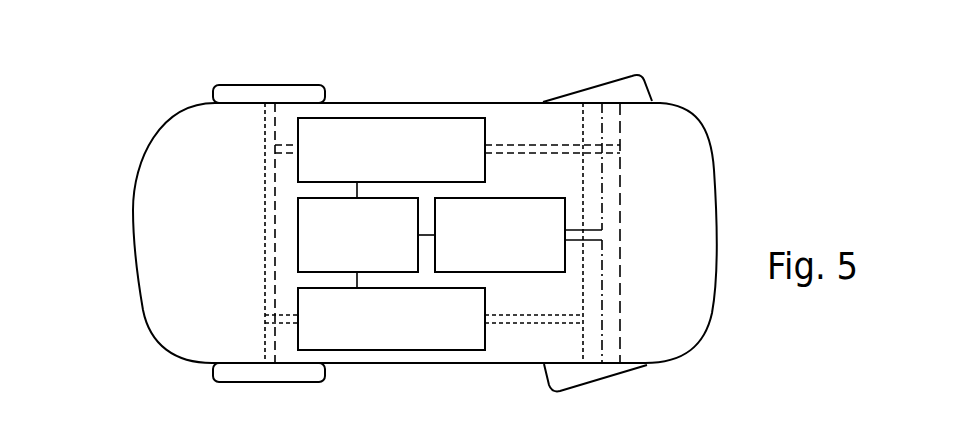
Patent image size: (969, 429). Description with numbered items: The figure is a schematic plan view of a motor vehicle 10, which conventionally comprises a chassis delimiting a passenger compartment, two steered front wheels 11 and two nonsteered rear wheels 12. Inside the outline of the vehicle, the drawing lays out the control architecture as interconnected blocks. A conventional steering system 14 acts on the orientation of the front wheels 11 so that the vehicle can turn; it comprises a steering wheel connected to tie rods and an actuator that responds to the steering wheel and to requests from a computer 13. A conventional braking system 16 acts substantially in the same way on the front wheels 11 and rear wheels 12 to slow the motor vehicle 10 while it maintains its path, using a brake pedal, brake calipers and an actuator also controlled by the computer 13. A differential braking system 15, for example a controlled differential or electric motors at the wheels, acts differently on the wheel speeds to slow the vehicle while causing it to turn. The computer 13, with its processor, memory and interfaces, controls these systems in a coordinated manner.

The motor vehicle 10 is at (133, 265).
The steered front wheels 11 is at (588, 86).
The nonsteered rear wheels 12 is at (268, 85).
The computer 13 is at (298, 216).
The conventional steering system 14 is at (528, 198).
The differential braking system 15 is at (393, 118).
The conventional braking system 16 is at (392, 351).